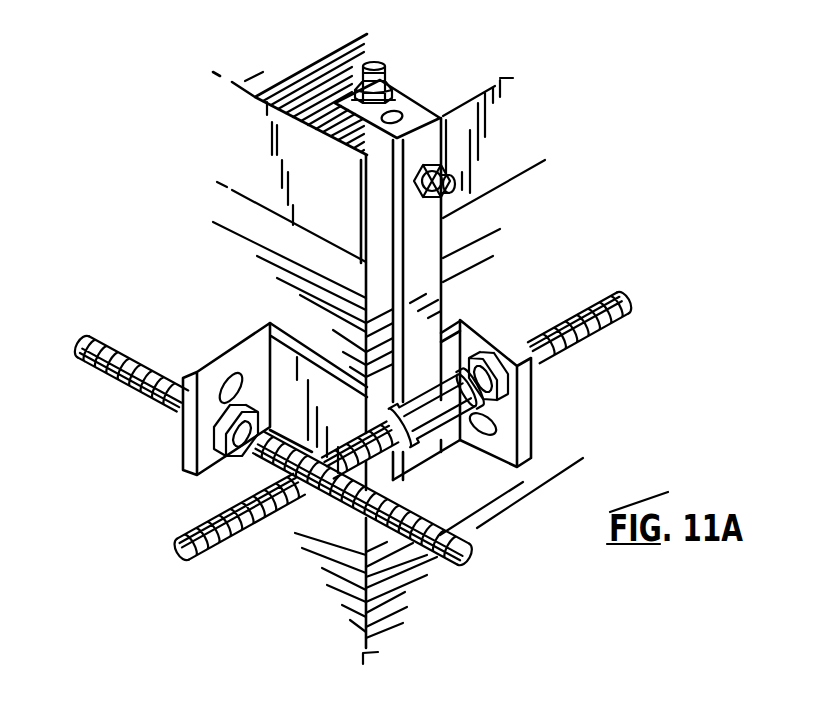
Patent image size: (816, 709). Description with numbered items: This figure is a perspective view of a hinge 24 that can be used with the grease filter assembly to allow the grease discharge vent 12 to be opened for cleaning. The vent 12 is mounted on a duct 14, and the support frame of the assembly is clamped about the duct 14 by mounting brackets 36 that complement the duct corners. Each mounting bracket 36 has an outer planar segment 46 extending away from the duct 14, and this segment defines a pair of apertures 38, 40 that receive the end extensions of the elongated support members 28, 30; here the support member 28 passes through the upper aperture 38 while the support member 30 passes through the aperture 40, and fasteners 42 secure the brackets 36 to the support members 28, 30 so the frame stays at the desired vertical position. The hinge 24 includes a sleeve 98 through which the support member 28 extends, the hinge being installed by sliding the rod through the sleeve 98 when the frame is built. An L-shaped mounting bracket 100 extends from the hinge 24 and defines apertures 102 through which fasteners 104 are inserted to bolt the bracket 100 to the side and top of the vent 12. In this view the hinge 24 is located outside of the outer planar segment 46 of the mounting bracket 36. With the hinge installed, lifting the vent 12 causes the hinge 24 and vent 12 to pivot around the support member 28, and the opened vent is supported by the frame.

The grease discharge vent 12 is at (333, 41).
The duct 14 is at (252, 277).
The hinge 24 is at (438, 263).
The support member 28 is at (618, 318).
The support member 30 is at (118, 340).
The mounting bracket 36 is at (313, 329).
The aperture 38 is at (231, 373).
The aperture 40 is at (486, 452).
The fastener 42 is at (242, 458).
The outer planar segment 46 is at (502, 428).
The sleeve 98 is at (426, 430).
The L-shaped mounting bracket 100 is at (413, 100).
The aperture 102 is at (403, 114).
The fastener 104 is at (379, 62).